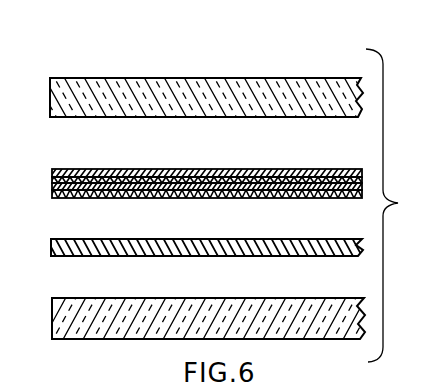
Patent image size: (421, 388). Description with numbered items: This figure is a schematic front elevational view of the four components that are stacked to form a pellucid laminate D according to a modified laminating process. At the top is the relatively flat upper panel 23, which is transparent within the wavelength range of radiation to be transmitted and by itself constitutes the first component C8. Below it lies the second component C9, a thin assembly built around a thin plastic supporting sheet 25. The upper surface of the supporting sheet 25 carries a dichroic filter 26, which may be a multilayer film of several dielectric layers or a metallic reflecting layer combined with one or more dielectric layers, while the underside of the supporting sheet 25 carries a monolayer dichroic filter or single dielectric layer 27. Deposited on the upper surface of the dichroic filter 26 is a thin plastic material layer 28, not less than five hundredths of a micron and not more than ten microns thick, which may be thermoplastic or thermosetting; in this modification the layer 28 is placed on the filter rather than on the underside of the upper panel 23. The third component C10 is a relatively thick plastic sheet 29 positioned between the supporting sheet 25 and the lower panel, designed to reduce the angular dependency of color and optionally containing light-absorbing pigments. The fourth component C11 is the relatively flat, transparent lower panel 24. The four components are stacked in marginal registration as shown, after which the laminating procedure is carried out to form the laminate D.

The laminate D is at (219, 52).
The first component C8 is at (86, 78).
The upper panel 23 is at (132, 78).
The second component C9 is at (214, 168).
The thin plastic material layer 28 is at (60, 169).
The dichroic filter 26 is at (50, 173).
The supporting sheet 25 is at (50, 188).
The monolayer dichroic filter 27 is at (50, 195).
The third component C10 is at (228, 238).
The plastic sheet 29 is at (52, 258).
The fourth component C11 is at (228, 298).
The lower panel 24 is at (104, 341).